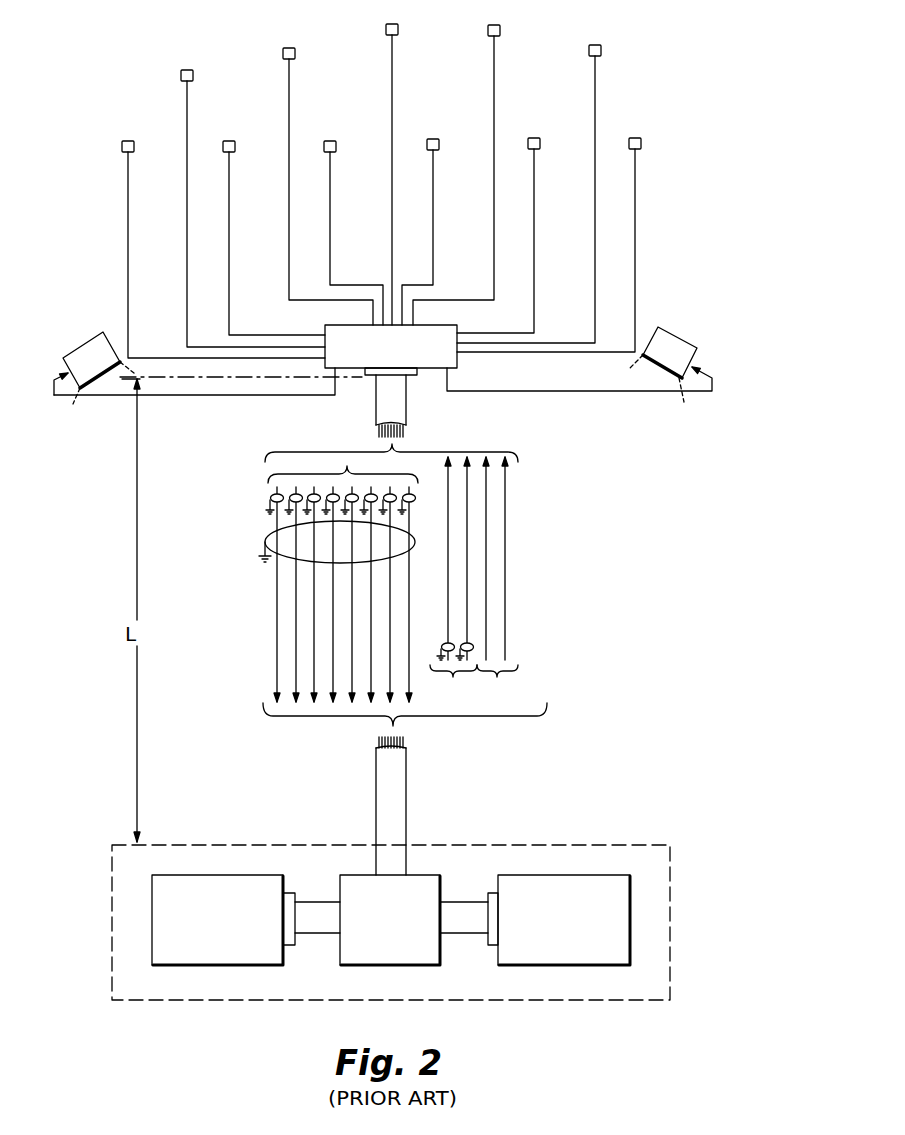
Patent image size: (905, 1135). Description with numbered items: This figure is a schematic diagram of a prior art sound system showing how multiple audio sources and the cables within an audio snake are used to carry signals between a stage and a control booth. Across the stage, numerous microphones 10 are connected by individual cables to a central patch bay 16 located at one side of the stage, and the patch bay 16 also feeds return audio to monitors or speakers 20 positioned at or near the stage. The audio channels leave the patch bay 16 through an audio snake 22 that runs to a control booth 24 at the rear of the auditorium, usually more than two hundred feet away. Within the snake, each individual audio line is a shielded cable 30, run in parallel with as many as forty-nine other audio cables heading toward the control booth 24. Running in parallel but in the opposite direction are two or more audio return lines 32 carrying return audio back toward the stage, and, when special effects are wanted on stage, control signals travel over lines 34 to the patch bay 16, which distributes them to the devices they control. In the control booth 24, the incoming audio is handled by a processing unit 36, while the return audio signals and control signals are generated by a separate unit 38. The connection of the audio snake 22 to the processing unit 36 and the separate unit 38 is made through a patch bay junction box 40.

The microphones 10 is at (194, 73).
The patch bay 16 is at (378, 356).
The speakers 20 is at (94, 352).
The audio snake 22 is at (396, 781).
The control booth 24 is at (391, 922).
The shielded audio cable 30 is at (279, 628).
The audio return lines 32 is at (467, 513).
The control signal lines 34 is at (508, 572).
The processing unit 36 is at (246, 920).
The return audio and control signal unit 38 is at (559, 919).
The patch bay junction box 40 is at (378, 927).